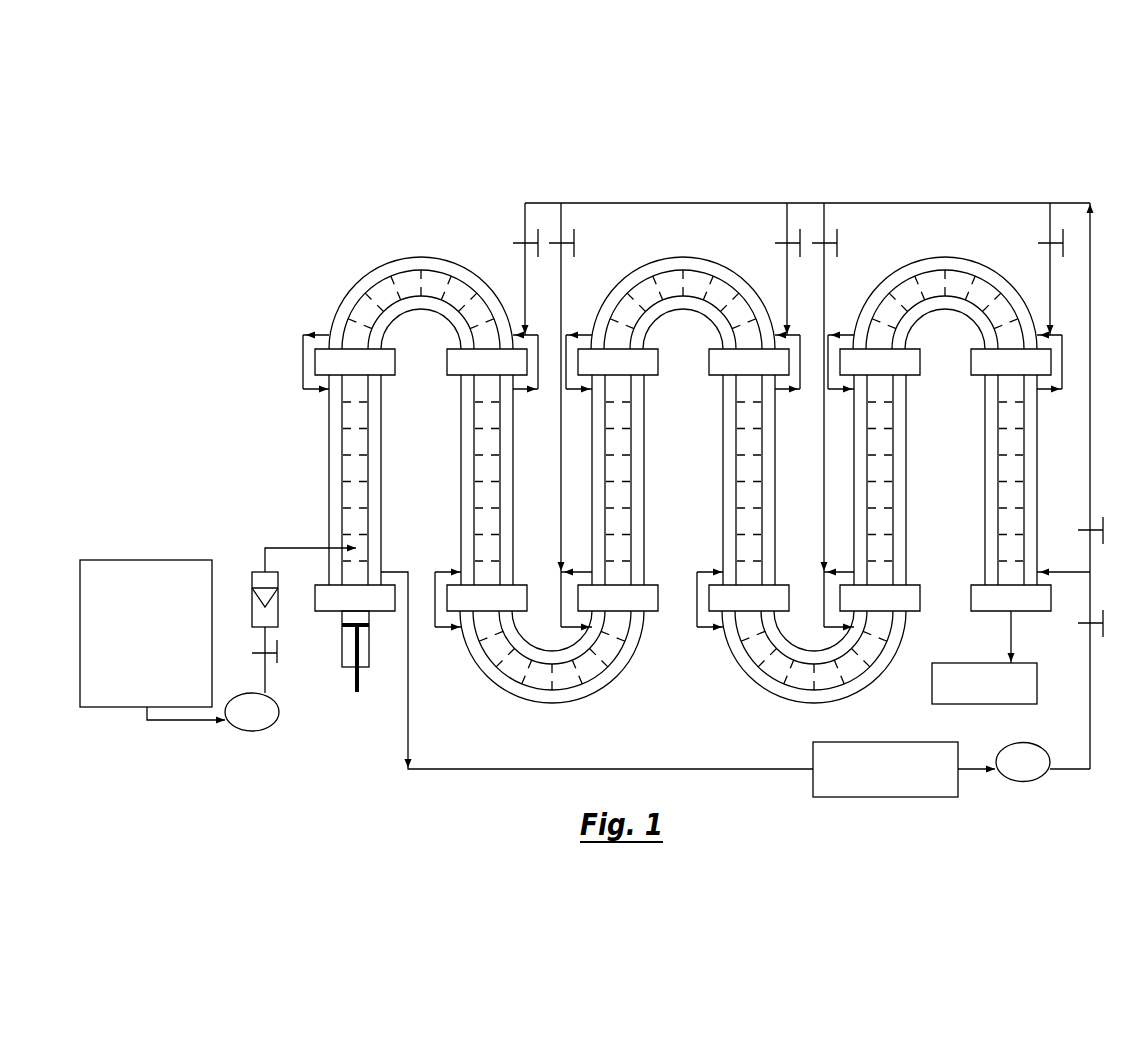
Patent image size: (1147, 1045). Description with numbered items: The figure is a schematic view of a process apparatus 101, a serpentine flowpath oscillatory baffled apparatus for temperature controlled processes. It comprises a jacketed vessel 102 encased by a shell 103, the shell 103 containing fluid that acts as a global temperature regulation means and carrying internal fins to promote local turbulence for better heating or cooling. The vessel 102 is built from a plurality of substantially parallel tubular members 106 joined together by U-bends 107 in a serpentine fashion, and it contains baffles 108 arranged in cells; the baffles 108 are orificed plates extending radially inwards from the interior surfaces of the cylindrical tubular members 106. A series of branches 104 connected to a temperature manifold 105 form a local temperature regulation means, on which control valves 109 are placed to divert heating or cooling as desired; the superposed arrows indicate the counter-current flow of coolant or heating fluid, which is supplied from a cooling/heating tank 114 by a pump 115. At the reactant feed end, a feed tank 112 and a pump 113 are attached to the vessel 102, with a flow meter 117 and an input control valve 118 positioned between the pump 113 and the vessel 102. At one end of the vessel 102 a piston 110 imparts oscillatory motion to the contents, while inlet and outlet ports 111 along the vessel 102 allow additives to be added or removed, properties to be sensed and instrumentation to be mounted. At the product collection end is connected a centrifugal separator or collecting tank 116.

The process apparatus 101 is at (666, 494).
The jacketed vessel 102 is at (342, 418).
The shell 103 is at (330, 453).
The branches 104 is at (825, 281).
The temperature manifold 105 is at (705, 203).
The tubular members 106 is at (330, 503).
The U-bends 107 is at (400, 262).
The baffles 108 is at (1018, 450).
The control valves 109 is at (1102, 632).
The piston 110 is at (358, 686).
The inlet and outlet ports 111 is at (972, 376).
The feed tank 112 is at (130, 580).
The pump 113 is at (253, 722).
The cooling/heating tank 114 is at (873, 780).
The pump 115 is at (1023, 772).
The collecting tank 116 is at (940, 683).
The flow meter 117 is at (255, 578).
The input control valve 118 is at (277, 660).